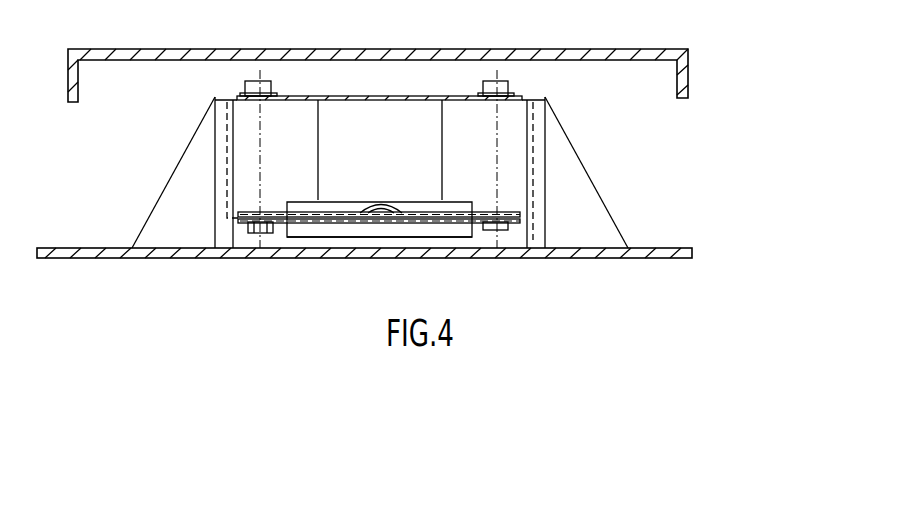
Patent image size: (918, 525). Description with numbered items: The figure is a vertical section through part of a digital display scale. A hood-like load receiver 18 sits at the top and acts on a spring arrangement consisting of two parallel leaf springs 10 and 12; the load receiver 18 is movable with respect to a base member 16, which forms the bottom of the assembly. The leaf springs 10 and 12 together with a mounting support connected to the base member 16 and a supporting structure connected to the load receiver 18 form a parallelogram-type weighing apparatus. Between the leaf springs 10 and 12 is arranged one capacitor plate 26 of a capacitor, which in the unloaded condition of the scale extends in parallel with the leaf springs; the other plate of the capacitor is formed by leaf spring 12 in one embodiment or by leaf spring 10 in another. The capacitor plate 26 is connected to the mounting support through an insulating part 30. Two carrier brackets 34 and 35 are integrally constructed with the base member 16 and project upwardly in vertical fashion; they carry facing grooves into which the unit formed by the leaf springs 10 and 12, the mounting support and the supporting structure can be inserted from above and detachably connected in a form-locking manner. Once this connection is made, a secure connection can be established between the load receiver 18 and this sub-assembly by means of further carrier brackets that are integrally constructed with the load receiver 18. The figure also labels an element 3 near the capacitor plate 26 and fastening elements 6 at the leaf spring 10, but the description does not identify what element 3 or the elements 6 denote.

The sensor element 3 is at (372, 215).
The nut 6 is at (257, 81).
The leaf spring 10 is at (416, 96).
The leaf spring 12 is at (302, 229).
The base member 16 is at (603, 248).
The load receiver 18 is at (575, 49).
The capacitor plate 26 is at (278, 213).
The insulating part 30 is at (457, 232).
The carrier bracket 34 is at (537, 142).
The carrier bracket 35 is at (216, 143).